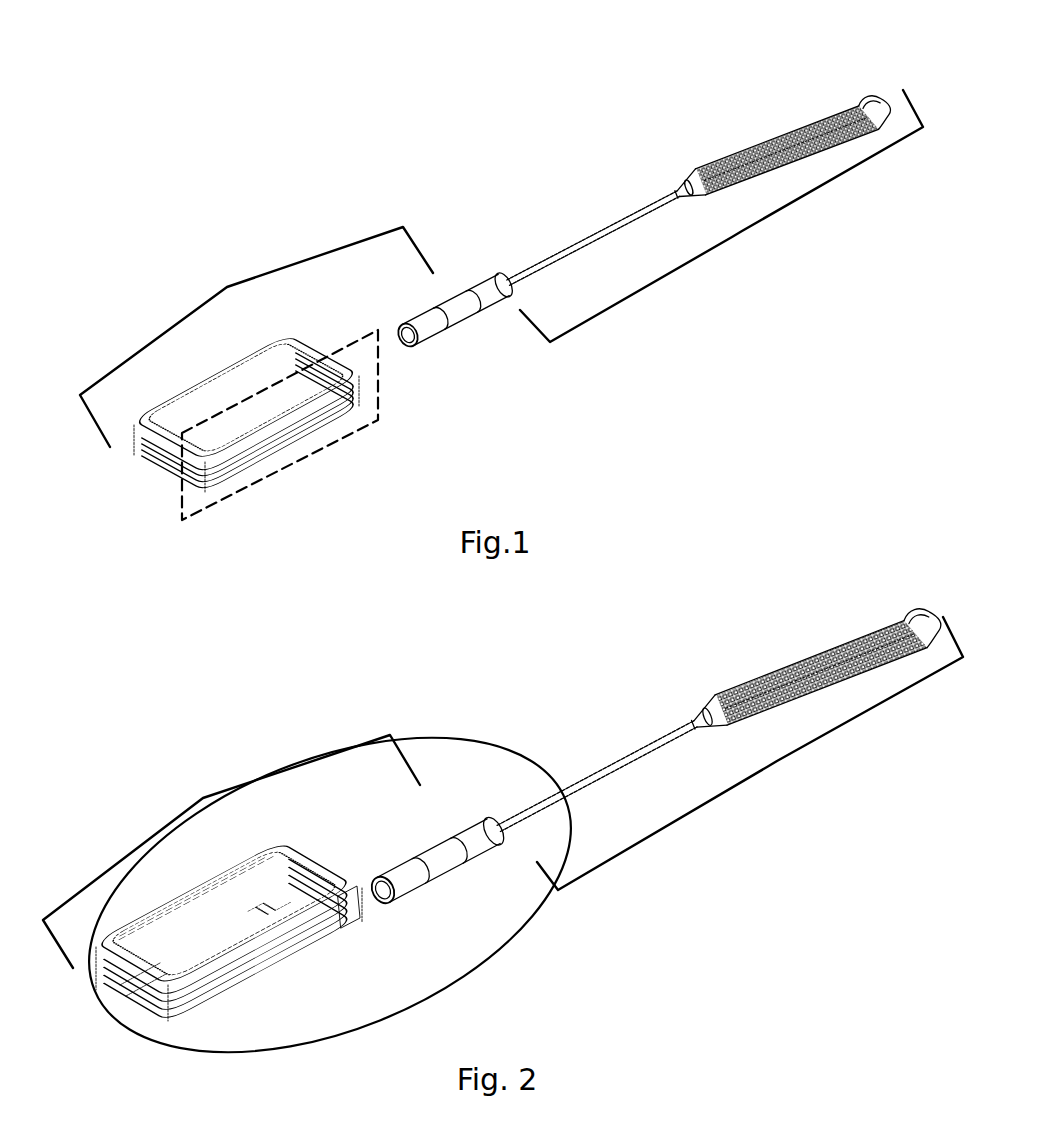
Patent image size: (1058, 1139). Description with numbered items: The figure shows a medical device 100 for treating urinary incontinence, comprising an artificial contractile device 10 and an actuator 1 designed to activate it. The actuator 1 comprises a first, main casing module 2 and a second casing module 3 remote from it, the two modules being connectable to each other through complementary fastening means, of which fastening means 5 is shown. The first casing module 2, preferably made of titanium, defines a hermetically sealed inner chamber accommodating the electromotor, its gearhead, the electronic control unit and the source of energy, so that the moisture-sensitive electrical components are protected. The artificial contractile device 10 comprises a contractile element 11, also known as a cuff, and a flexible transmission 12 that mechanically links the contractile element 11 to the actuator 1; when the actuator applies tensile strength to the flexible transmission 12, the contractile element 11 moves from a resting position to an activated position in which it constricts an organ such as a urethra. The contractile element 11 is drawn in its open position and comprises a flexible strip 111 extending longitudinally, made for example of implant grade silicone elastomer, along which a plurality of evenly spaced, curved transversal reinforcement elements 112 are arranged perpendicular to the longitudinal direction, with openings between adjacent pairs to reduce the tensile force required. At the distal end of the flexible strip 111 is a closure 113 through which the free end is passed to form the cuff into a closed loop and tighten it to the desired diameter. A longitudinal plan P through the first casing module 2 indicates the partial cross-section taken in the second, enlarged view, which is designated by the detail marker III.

In FIG. 1, the medical device 100 is at (440, 150).
In FIG. 2, the medical device 100 is at (482, 700).
In FIG. 1, the actuator 1 is at (227, 287).
In FIG. 2, the actuator 1 is at (203, 798).
In FIG. 1, the first casing module 2 is at (243, 372).
In FIG. 2, the first casing module 2 is at (223, 897).
In FIG. 1, the second casing module 3 is at (448, 309).
In FIG. 2, the second casing module 3 is at (437, 857).
In FIG. 1, the fastening means 5 is at (414, 325).
In FIG. 2, the fastening means 5 is at (399, 866).
In FIG. 1, the artificial contractile device 10 is at (737, 232).
In FIG. 2, the artificial contractile device 10 is at (771, 763).
In FIG. 1, the contractile element 11 is at (806, 117).
In FIG. 2, the contractile element 11 is at (767, 630).
In FIG. 1, the flexible strip 111 is at (773, 148).
In FIG. 2, the flexible strip 111 is at (838, 650).
In FIG. 1, the transversal reinforcement elements 112 is at (732, 172).
In FIG. 2, the transversal reinforcement elements 112 is at (722, 707).
In FIG. 1, the closure 113 is at (866, 88).
In FIG. 2, the closure 113 is at (922, 597).
In FIG. 1, the flexible transmission 12 is at (622, 224).
In FIG. 2, the flexible transmission 12 is at (613, 768).
In FIG. 1, the longitudinal plan P is at (218, 495).
In FIG. 2, the view III is at (513, 930).